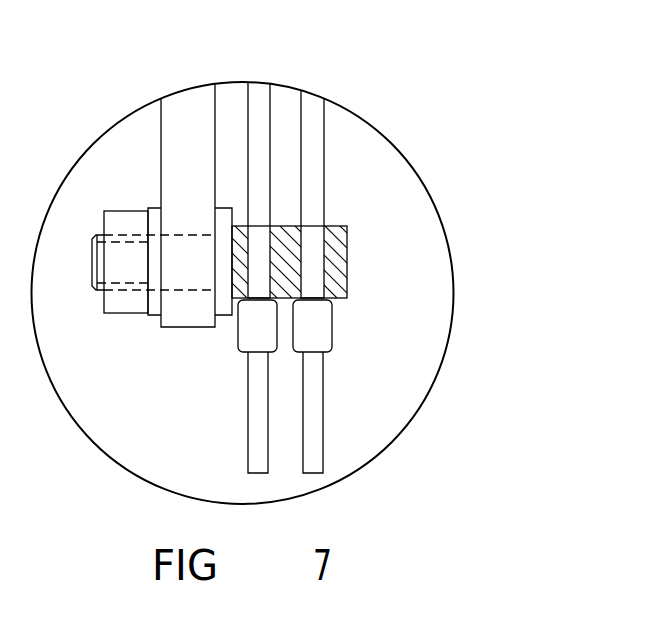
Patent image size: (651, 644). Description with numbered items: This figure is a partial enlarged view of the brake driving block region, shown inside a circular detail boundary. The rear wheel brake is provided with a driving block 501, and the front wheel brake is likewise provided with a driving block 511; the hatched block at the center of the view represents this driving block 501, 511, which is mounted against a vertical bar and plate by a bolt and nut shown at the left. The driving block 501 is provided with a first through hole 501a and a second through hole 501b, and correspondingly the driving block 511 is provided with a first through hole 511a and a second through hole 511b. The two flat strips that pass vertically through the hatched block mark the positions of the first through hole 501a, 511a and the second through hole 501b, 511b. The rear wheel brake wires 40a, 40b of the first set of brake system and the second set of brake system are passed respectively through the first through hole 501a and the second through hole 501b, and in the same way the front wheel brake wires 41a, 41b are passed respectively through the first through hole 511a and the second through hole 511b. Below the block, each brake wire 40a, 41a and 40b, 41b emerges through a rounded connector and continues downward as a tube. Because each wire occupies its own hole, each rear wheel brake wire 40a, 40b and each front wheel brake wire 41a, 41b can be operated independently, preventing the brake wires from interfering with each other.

The driving block 501 is at (347, 260).
The driving block 511 is at (336, 233).
The first through hole 501a is at (270, 222).
The first through hole 511a is at (302, 166).
The second through hole 501b is at (326, 222).
The second through hole 511b is at (376, 192).
The rear wheel brake wire 40a is at (315, 420).
The front wheel brake wire 41a is at (356, 386).
The rear wheel brake wire 40b is at (257, 430).
The front wheel brake wire 41b is at (212, 386).